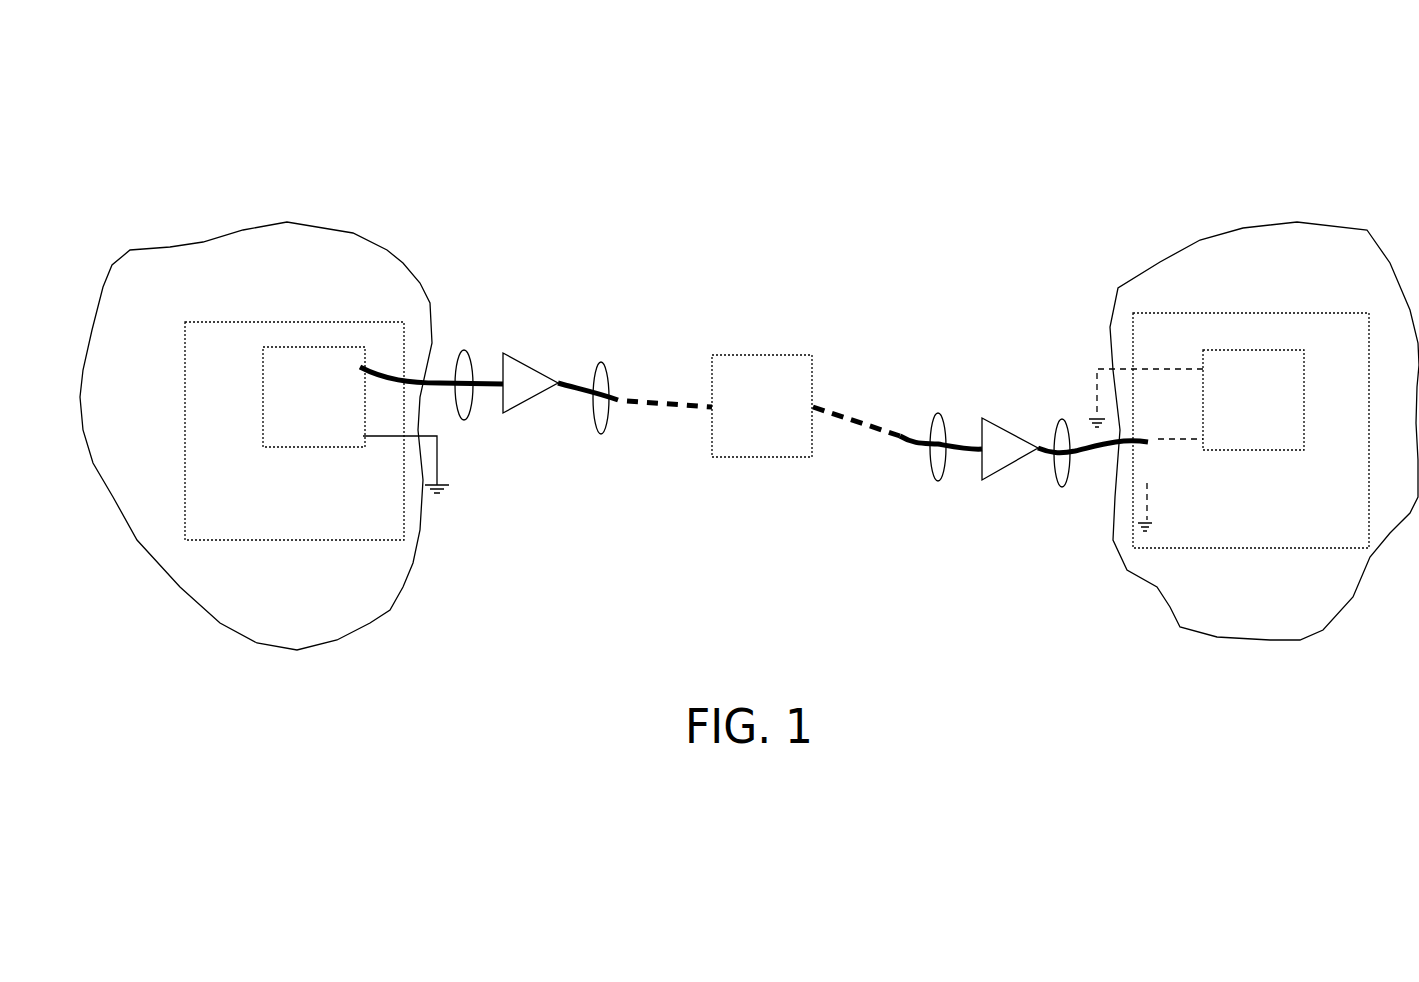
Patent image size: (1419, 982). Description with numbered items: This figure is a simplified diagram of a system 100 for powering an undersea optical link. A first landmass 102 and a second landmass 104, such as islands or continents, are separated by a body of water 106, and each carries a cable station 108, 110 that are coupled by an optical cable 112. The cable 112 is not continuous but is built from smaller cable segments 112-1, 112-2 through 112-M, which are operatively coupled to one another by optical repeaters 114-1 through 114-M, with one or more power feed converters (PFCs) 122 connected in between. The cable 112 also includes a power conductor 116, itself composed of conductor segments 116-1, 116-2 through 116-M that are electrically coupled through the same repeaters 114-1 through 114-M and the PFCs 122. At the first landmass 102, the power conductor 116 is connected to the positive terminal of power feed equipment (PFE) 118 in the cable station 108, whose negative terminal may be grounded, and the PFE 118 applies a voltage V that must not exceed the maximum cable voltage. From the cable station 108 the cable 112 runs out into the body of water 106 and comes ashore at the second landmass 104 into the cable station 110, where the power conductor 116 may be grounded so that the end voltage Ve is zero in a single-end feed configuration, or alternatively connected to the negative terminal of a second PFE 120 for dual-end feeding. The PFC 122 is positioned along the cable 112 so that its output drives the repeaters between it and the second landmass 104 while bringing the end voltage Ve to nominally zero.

The system 100 is at (530, 115).
The first landmass 102 is at (280, 304).
The second landmass 104 is at (1280, 302).
The body of water 106 is at (780, 626).
The cable station 108 is at (320, 519).
The cable station 110 is at (1312, 546).
The optical cable 112 is at (754, 446).
The cable segment 112-1 is at (464, 420).
The cable segment 112-2 is at (603, 433).
The cable segment 112-M is at (937, 482).
The optical repeater 114-1 is at (537, 363).
The optical repeater 114-M is at (1013, 432).
The power conductor 116 is at (680, 385).
The conductor segment 116-1 is at (437, 377).
The conductor segment 116-2 is at (590, 380).
The conductor segment 116-M is at (968, 438).
The power feed equipment 118 is at (318, 422).
The power feed equipment 120 is at (1289, 431).
The power feed converter 122 is at (782, 431).